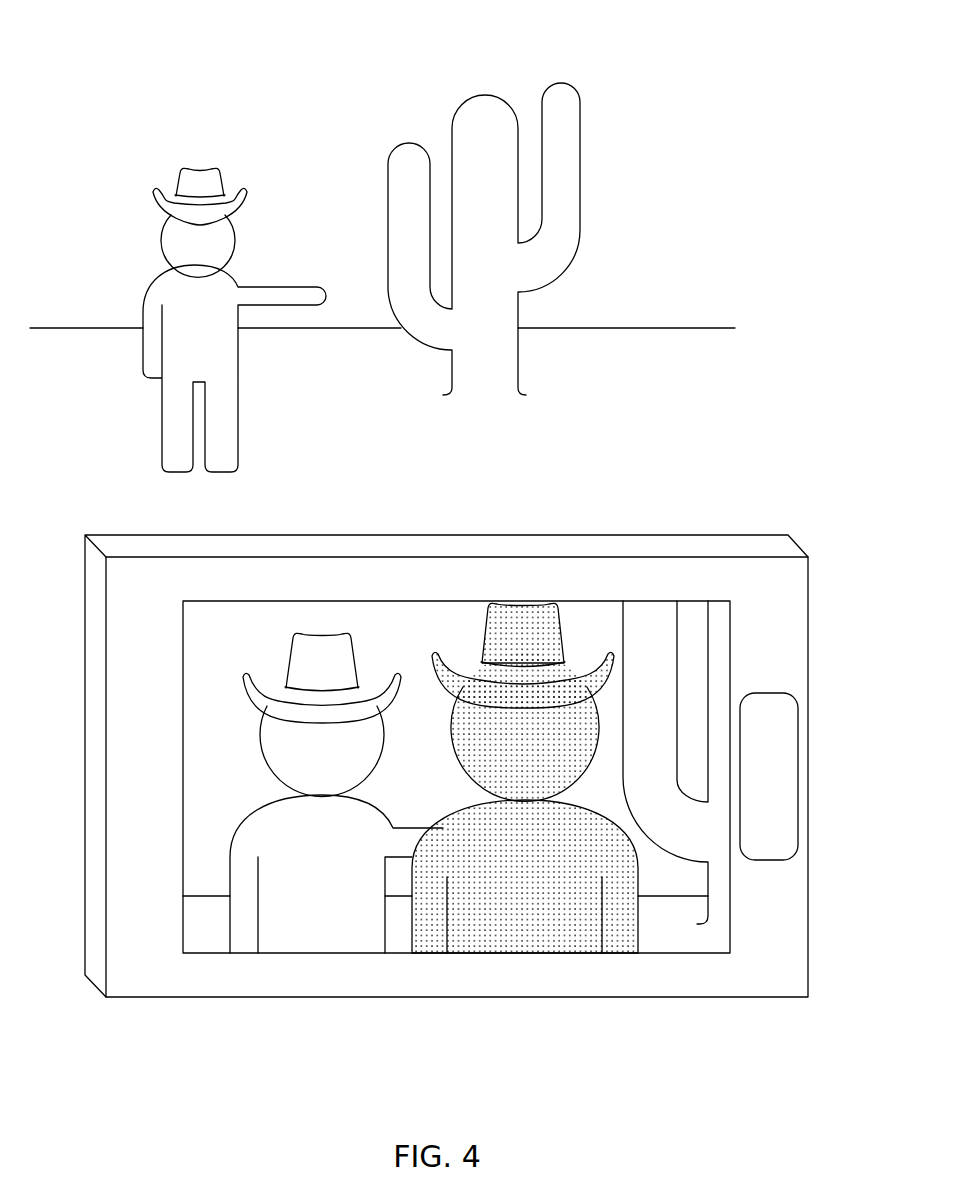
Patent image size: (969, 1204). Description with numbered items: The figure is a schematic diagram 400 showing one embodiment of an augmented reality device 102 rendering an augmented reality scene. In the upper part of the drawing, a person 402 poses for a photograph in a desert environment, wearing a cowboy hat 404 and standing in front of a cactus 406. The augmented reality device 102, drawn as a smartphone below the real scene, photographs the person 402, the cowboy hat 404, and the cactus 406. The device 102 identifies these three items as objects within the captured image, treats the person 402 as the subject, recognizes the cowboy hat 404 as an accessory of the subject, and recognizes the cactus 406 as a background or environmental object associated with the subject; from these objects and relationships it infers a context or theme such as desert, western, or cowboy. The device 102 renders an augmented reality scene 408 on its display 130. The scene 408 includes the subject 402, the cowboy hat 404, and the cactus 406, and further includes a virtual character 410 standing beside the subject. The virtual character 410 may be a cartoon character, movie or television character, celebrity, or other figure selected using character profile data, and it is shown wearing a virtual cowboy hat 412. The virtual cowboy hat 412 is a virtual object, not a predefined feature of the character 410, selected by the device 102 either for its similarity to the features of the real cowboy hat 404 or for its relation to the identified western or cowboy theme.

The diagram 400 is at (814, 131).
The augmented reality device 102 is at (738, 533).
The display 130 is at (680, 598).
The augmented reality scene 408 is at (203, 667).
The person 402 is at (106, 292).
The cowboy hat 404 is at (212, 184).
The cactus 406 is at (565, 218).
The virtual character 410 is at (560, 905).
The virtual cowboy hat 412 is at (528, 622).